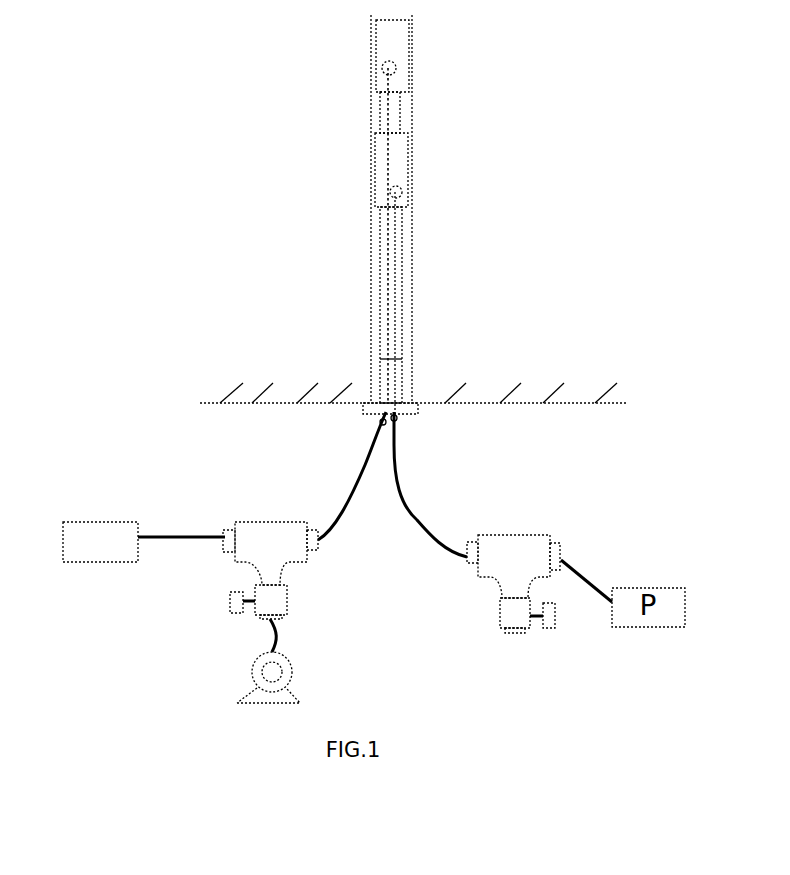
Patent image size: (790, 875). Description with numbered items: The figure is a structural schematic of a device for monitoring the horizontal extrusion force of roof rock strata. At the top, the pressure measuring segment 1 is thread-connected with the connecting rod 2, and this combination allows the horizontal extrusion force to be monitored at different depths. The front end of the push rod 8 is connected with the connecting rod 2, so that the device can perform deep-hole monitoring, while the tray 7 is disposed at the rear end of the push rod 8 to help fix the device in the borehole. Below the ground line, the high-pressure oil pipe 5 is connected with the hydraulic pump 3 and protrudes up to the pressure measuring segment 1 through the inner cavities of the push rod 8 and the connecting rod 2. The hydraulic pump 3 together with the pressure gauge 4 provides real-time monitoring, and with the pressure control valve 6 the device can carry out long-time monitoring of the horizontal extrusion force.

The pressure measuring segment 1 is at (398, 43).
The connecting rod 2 is at (402, 250).
The hydraulic pump 3 is at (252, 672).
The pressure gauge 4 is at (110, 522).
The high-pressure oil pipe 5 is at (398, 465).
The pressure control valve 6 is at (228, 522).
The tray 7 is at (368, 412).
The push rod 8 is at (402, 360).